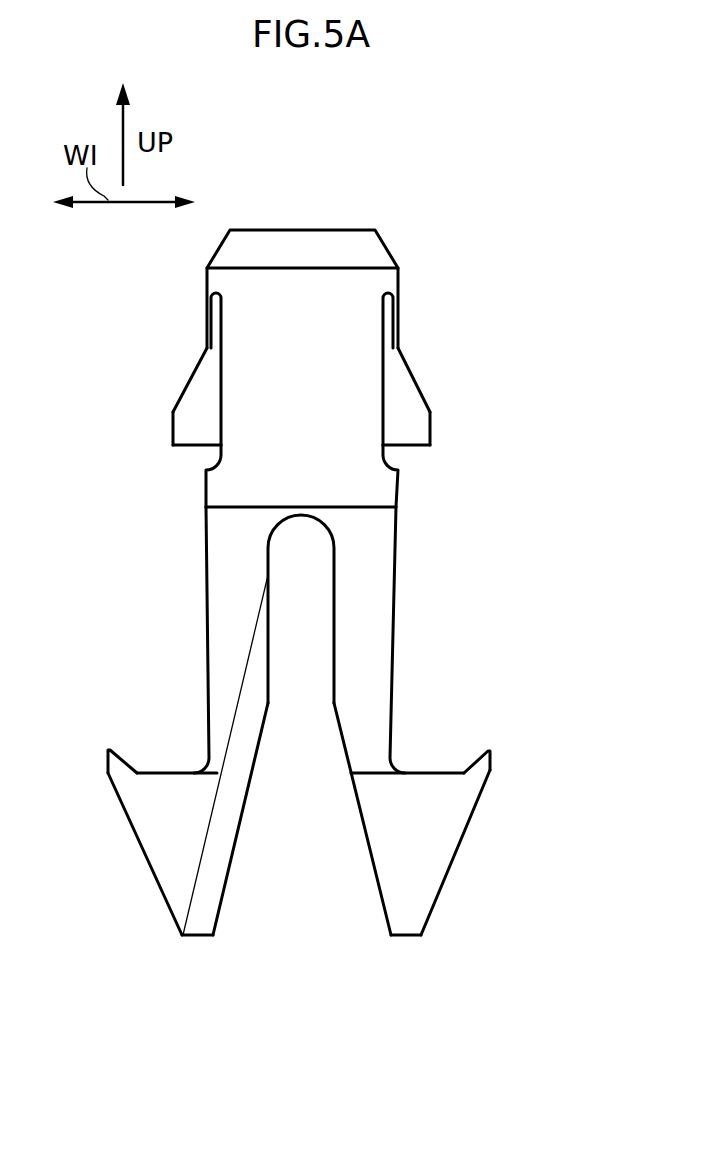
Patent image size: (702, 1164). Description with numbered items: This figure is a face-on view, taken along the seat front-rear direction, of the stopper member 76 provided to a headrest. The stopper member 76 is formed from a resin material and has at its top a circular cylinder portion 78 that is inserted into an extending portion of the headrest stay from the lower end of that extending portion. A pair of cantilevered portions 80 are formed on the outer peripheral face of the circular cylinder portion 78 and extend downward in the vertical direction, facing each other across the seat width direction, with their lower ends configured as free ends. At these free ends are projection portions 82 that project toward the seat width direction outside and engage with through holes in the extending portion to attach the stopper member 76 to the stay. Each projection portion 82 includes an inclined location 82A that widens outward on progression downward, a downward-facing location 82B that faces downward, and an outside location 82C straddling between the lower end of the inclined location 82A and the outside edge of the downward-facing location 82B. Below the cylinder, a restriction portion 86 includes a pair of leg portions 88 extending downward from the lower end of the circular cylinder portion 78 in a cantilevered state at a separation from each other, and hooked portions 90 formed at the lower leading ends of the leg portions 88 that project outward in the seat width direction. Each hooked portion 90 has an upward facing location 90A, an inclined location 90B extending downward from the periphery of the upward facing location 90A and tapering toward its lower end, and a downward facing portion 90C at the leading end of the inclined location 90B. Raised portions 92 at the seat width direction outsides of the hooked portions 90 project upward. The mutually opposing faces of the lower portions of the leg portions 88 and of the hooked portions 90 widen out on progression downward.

The stopper member 76 is at (440, 192).
The circular cylinder portion 78 is at (414, 251).
The cantilevered portions 80 is at (178, 325).
The projection portions 82 is at (80, 366).
The inclined location 82A is at (191, 378).
The downward-facing location 82B is at (192, 447).
The outside location 82C is at (173, 431).
The restriction portion 86 is at (126, 611).
The leg portions 88 is at (206, 578).
The hooked portions 90 is at (146, 882).
The upward facing location 90A is at (168, 773).
The inclined location 90B is at (143, 850).
The downward facing portion 90C is at (197, 937).
The raised portions 92 is at (112, 752).